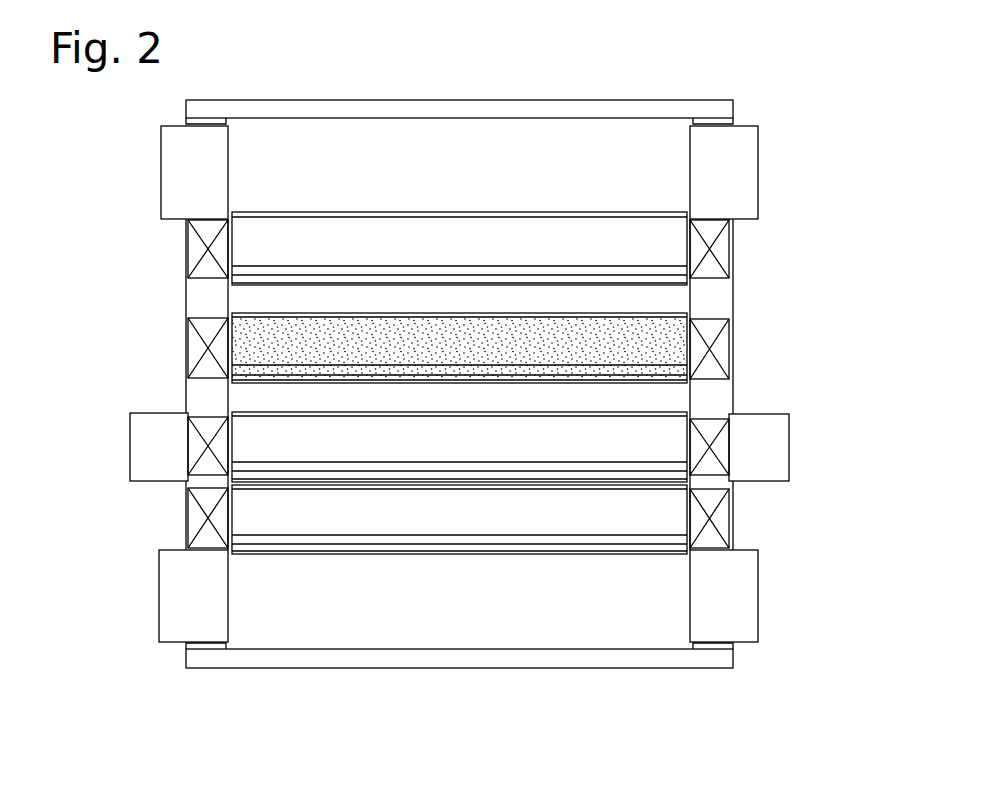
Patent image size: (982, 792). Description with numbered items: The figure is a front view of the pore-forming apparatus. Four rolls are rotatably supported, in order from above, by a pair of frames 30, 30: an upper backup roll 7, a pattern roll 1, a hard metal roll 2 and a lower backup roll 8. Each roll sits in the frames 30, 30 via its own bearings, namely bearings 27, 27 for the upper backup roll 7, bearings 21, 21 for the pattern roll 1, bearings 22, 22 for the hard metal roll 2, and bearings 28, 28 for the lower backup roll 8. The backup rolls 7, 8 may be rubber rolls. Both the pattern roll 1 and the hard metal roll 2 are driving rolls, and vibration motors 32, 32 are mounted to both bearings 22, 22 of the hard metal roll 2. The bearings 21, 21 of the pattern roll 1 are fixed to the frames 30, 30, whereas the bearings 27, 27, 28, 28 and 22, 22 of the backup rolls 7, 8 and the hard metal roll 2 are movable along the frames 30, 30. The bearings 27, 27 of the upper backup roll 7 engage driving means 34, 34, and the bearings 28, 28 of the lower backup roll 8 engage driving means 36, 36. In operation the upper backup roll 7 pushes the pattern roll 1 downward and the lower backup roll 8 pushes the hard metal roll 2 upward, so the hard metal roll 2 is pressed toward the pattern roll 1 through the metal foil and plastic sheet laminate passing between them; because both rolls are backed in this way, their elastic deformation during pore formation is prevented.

The pattern roll 1 is at (668, 322).
The hard metal roll 2 is at (665, 428).
The backup roll 7 is at (668, 250).
The backup roll 8 is at (667, 521).
The bearing 21 is at (195, 350).
The bearing 22 is at (194, 436).
The bearing 27 is at (195, 248).
The bearing 28 is at (195, 517).
The frame 30 is at (192, 300).
The vibration motor 32 is at (138, 446).
The driving means 34 is at (170, 169).
The driving means 36 is at (170, 586).